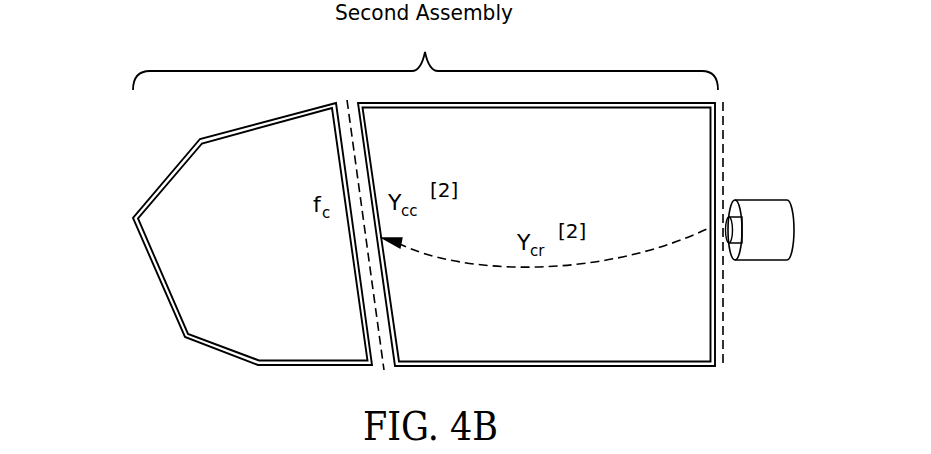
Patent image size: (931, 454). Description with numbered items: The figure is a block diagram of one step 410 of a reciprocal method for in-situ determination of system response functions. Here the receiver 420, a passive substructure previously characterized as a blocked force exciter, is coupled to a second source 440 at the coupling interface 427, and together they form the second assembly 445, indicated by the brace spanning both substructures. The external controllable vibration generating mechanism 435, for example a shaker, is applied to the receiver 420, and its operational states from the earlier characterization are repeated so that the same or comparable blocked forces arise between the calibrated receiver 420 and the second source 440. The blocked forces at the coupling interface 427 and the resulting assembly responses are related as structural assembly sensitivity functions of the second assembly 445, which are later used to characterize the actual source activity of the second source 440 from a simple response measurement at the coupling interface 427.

The step 410 is at (117, 210).
The receiver 420 is at (595, 367).
The coupling interface 427 is at (347, 104).
The external controllable vibration generating mechanism 435 is at (795, 227).
The second source 440 is at (210, 348).
The second assembly 445 is at (425, 58).